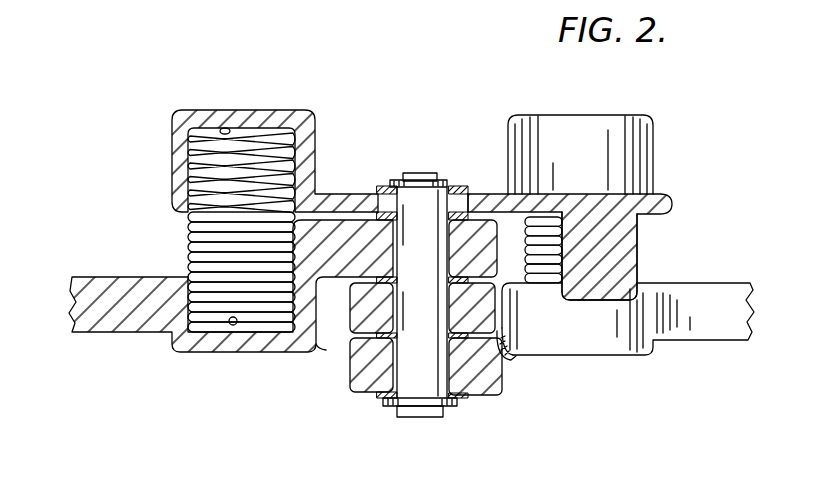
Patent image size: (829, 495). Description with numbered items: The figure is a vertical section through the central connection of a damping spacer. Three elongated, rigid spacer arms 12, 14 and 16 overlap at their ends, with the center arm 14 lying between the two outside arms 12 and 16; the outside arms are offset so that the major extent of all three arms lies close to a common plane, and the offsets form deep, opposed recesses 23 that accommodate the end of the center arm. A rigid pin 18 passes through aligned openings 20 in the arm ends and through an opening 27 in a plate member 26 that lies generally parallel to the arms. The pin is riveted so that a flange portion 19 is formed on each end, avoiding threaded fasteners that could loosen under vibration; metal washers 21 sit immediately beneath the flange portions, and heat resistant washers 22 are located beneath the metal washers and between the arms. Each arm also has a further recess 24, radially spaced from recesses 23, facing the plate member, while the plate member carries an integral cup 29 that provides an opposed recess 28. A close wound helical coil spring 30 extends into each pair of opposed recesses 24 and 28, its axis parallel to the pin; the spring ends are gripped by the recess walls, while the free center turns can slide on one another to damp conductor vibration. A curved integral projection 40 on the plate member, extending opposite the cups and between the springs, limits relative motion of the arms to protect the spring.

The spacer arm 12 is at (106, 277).
The spacer arm 14 is at (352, 303).
The spacer arm 16 is at (707, 341).
The rigid pin 18 is at (430, 314).
The flange portion 19 is at (422, 173).
The openings 20 is at (455, 240).
The metal washer 21 is at (389, 182).
The heat resistant washer 22 is at (383, 208).
The recess 23 is at (331, 343).
The recess 24 is at (231, 325).
The plate member 26 is at (330, 194).
The opening 27 is at (470, 212).
The recess 28 is at (221, 128).
The cup 29 is at (436, 183).
The close wound helical coil spring 30 is at (188, 229).
The projection 40 is at (638, 246).